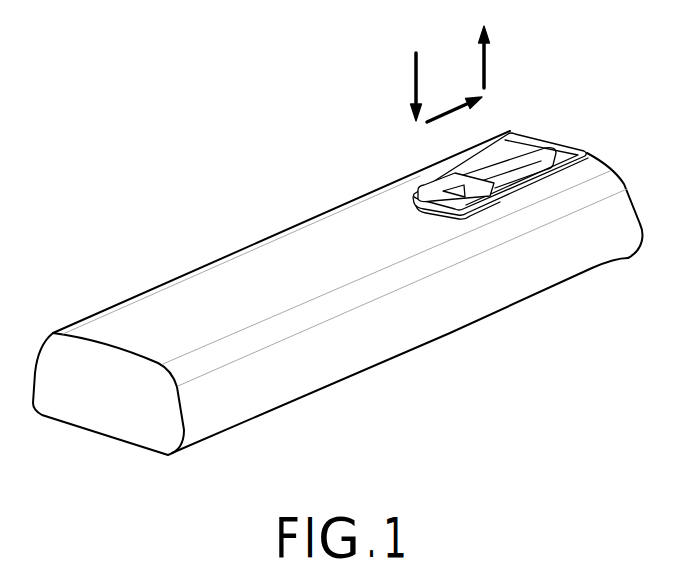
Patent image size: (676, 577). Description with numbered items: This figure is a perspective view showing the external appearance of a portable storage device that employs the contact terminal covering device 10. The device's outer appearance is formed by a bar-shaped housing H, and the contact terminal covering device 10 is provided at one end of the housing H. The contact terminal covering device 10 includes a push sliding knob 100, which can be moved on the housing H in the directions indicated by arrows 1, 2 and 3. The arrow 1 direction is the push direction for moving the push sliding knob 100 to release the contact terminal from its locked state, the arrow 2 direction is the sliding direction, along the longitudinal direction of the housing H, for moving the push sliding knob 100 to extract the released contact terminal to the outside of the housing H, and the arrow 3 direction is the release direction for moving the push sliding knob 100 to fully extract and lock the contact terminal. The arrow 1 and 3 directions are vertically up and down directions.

The housing H is at (195, 292).
The contact terminal covering device 10 is at (522, 170).
The push sliding knob 100 is at (473, 192).
The arrow ① direction 1 is at (413, 80).
The arrow ② direction 2 is at (447, 102).
The arrow ③ direction 3 is at (485, 62).